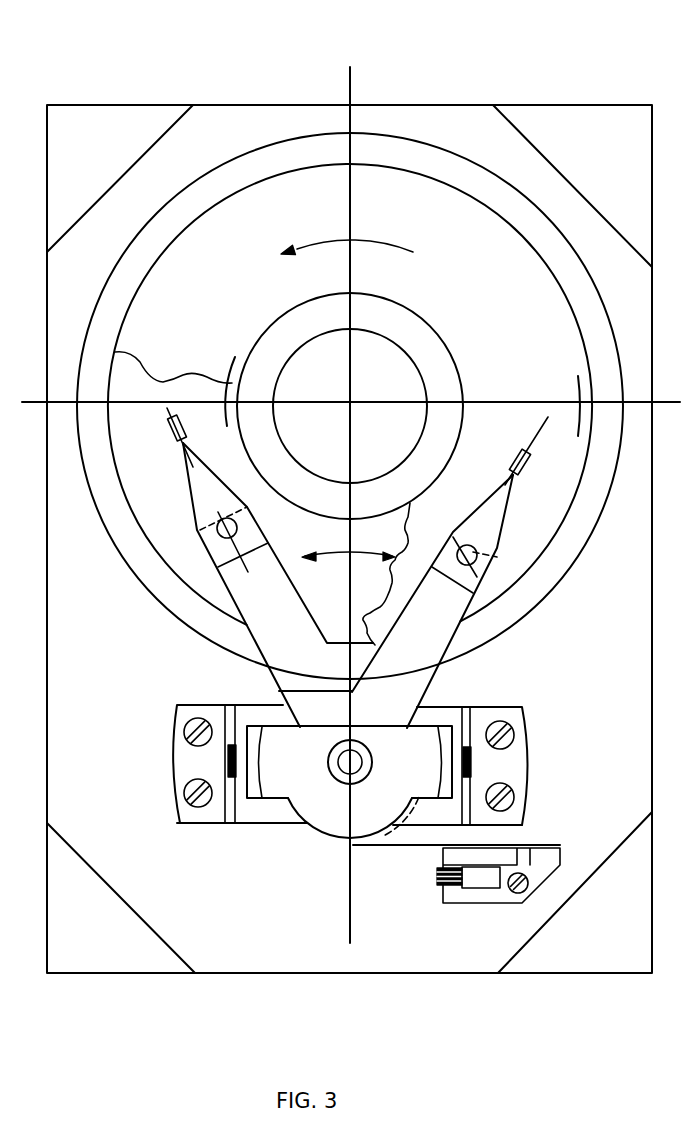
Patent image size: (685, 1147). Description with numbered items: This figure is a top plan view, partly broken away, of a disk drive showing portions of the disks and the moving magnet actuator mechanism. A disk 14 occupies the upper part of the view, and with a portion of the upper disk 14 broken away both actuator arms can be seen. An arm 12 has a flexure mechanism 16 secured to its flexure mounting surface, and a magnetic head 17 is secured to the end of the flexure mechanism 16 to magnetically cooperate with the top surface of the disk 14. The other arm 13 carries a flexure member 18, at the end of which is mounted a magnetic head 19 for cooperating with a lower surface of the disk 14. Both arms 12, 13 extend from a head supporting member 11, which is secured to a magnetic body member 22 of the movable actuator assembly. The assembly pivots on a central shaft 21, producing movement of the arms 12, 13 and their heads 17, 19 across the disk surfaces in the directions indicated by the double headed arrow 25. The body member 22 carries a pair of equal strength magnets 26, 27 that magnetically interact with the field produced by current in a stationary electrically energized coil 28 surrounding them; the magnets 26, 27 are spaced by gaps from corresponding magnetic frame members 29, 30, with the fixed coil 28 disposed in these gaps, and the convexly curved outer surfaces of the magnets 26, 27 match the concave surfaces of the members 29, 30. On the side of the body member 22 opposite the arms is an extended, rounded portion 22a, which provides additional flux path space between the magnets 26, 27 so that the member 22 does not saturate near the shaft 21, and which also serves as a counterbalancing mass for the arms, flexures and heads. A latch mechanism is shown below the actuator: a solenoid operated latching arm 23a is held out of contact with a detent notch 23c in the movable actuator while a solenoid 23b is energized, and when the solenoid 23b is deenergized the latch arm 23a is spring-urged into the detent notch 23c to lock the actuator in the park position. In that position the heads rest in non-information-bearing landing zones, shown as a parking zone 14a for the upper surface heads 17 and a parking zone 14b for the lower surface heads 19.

The head supporting member 11 is at (335, 725).
The arm 12 is at (444, 637).
The arm 13 is at (283, 612).
The disk 14 is at (240, 298).
The parking zone 14a is at (577, 398).
The parking zone 14b is at (230, 380).
The flexure mechanism 16 is at (502, 540).
The magnetic head 17 is at (527, 475).
The flexure member 18 is at (223, 505).
The magnetic head 19 is at (170, 433).
The central shaft 21 is at (372, 767).
The magnetic body member 22 is at (307, 780).
The extended rounded portion 22a is at (338, 823).
The latching arm 23a is at (383, 848).
The solenoid 23b is at (483, 897).
The detent notch 23c is at (392, 832).
The double headed arrow 25 is at (355, 540).
The magnet 26 is at (443, 737).
The magnet 27 is at (252, 783).
The coil 28 is at (470, 765).
The magnetic frame member 29 is at (467, 712).
The magnetic frame member 30 is at (230, 705).